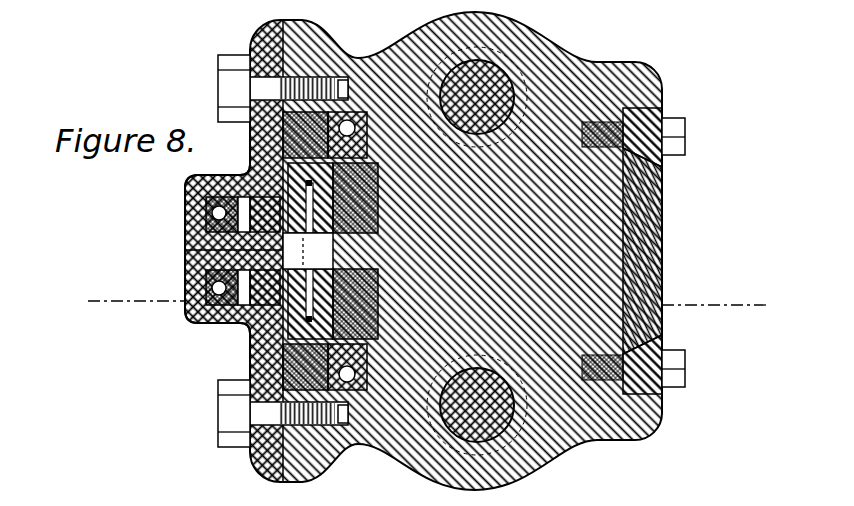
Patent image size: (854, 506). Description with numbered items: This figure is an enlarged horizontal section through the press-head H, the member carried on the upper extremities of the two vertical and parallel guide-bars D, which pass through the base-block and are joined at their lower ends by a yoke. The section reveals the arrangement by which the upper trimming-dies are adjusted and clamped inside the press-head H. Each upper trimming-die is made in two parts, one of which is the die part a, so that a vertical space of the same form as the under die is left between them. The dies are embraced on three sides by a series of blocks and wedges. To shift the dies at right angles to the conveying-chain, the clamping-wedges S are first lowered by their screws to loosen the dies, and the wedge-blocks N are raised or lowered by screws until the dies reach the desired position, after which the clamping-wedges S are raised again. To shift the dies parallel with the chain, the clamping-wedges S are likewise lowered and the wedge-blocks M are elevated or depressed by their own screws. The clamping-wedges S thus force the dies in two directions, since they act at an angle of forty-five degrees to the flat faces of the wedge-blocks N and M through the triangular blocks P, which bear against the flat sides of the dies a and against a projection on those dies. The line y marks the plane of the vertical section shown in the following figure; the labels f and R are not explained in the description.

The press-head H is at (423, 251).
The guide-bars D is at (477, 251).
The wedge-blocks N is at (325, 251).
The wedge-blocks M is at (333, 251).
The upper trimming-die part a is at (308, 251).
The cover plate f is at (662, 205).
The triangular blocks P is at (254, 335).
The clamping-wedges S is at (192, 307).
The bolt seat R is at (215, 331).
The section line y is at (427, 302).